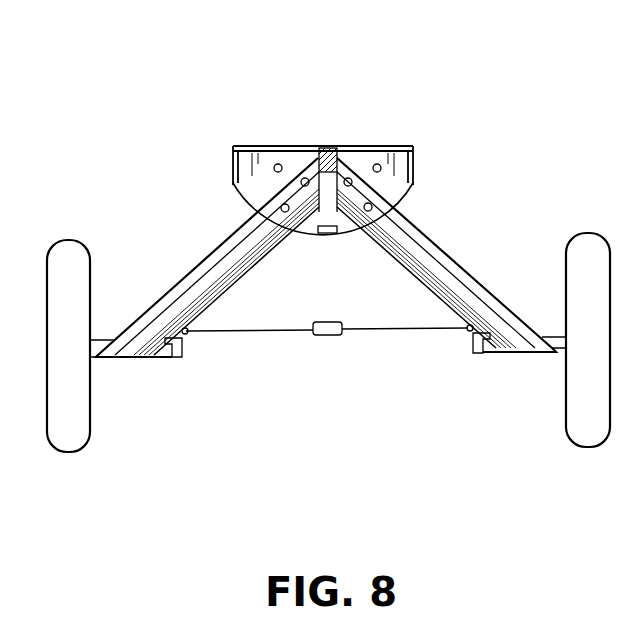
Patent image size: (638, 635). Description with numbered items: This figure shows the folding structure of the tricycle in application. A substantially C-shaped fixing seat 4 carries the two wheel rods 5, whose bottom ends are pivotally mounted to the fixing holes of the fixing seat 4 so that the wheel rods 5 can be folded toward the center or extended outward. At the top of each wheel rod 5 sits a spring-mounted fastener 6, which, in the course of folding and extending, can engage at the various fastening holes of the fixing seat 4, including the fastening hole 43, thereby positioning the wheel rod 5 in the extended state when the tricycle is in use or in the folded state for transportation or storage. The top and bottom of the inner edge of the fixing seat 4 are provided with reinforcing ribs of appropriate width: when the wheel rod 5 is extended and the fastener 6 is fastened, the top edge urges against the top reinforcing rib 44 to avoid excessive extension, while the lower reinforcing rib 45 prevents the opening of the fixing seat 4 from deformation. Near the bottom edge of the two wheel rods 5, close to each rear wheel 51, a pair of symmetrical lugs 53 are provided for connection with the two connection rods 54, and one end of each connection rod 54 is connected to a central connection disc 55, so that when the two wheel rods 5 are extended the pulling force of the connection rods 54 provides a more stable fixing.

The fixing seat 4 is at (260, 146).
The top reinforcing rib 44 is at (320, 146).
The fastener 6 is at (353, 163).
The fastening hole 43 is at (380, 158).
The lower reinforcing rib 45 is at (322, 235).
The wheel rod 5 is at (200, 253).
The rear wheel 51 is at (60, 242).
The lug 53 is at (188, 338).
The connection rod 54 is at (247, 332).
The connection disc 55 is at (333, 337).